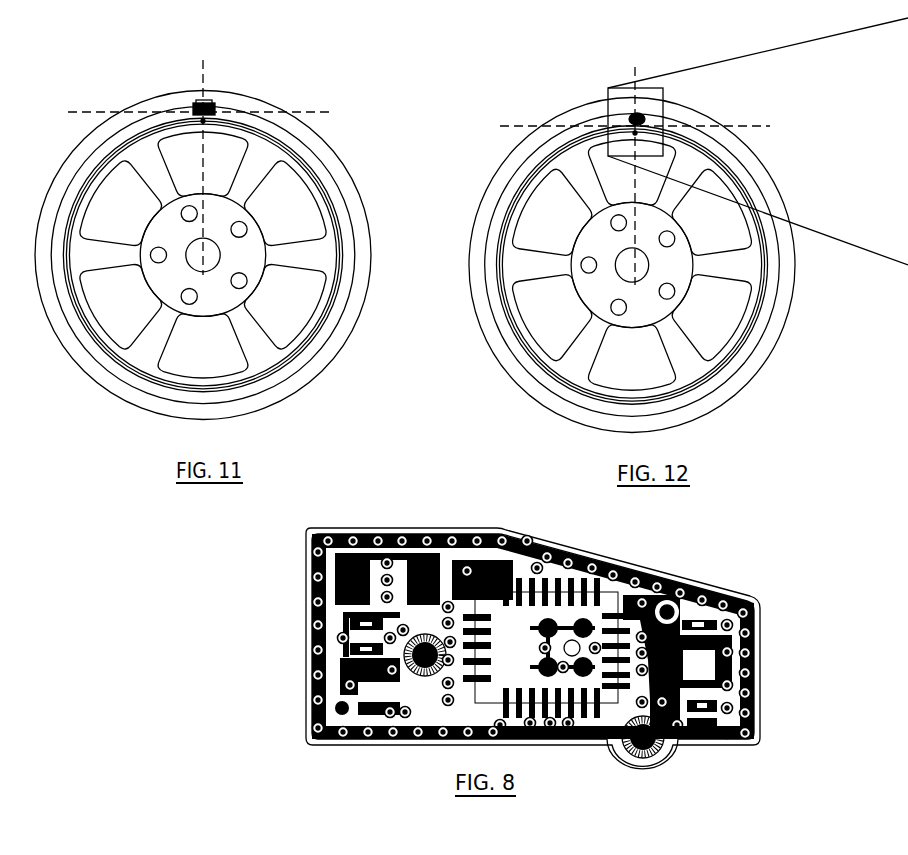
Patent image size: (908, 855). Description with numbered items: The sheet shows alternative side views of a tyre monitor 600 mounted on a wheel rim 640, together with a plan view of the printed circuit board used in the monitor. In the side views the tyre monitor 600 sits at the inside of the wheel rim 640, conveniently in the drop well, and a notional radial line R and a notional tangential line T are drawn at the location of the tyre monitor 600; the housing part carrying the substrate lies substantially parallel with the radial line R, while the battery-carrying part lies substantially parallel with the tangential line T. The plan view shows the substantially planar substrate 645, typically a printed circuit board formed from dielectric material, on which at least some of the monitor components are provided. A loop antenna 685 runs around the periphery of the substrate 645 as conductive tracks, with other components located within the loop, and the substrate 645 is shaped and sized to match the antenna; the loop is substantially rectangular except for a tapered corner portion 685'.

In FIG. 11, the wheel rim 640 is at (372, 170).
In FIG. 12, the wheel rim 640 is at (434, 148).
In FIG. 11, the tyre monitor 600 is at (222, 104).
In FIG. 11, the radial line R is at (207, 76).
In FIG. 12, the radial line R is at (638, 73).
In FIG. 11, the tangential line T is at (334, 118).
In FIG. 12, the tangential line T is at (738, 128).
In FIG. 8, the substrate 645 is at (768, 697).
In FIG. 8, the loop antenna 685 is at (528, 636).
In FIG. 8, the tapered corner portion 685' is at (653, 580).